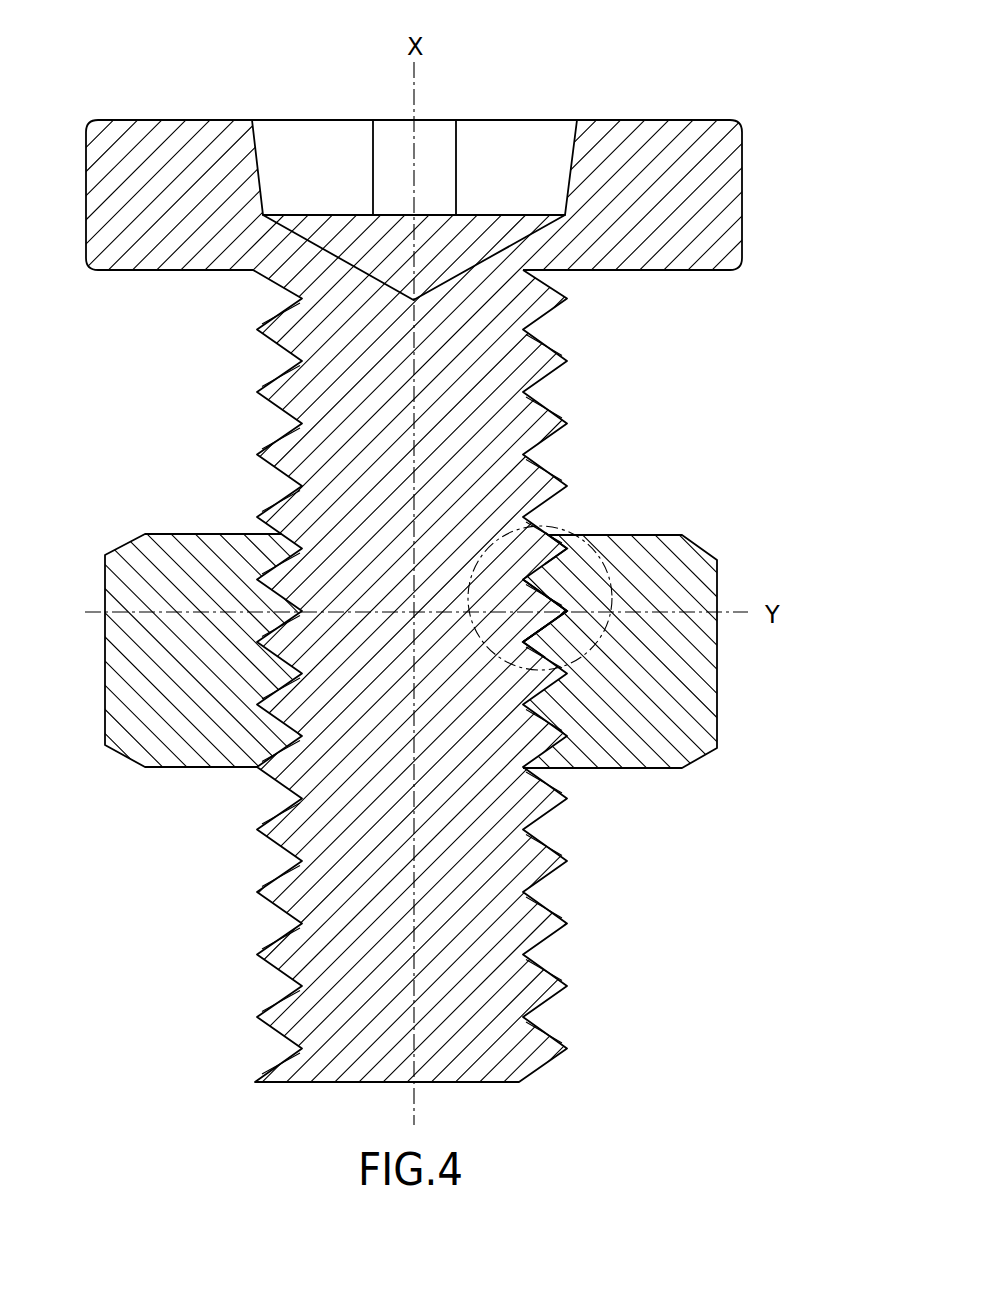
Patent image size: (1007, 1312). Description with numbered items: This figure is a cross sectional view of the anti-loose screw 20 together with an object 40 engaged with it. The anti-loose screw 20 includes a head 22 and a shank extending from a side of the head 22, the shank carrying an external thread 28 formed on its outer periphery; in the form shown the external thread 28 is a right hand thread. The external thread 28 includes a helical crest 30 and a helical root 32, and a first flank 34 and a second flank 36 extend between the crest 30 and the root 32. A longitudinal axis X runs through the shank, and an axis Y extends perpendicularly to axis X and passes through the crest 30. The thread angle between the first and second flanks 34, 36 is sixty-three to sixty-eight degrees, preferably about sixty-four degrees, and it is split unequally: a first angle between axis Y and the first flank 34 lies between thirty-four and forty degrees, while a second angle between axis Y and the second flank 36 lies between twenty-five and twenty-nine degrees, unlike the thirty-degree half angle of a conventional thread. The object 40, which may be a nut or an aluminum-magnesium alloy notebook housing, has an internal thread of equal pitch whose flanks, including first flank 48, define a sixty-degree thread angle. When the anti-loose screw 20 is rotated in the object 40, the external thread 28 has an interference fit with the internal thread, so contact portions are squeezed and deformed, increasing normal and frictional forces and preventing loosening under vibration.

The anti-loose screw 20 is at (703, 100).
The head 22 is at (722, 192).
The external thread 28 is at (582, 452).
The crest 30 is at (567, 613).
The root 32 is at (525, 647).
The first flank 34 is at (553, 627).
The second flank 36 is at (548, 603).
The object 40 is at (718, 558).
The first flank 48 is at (560, 558).